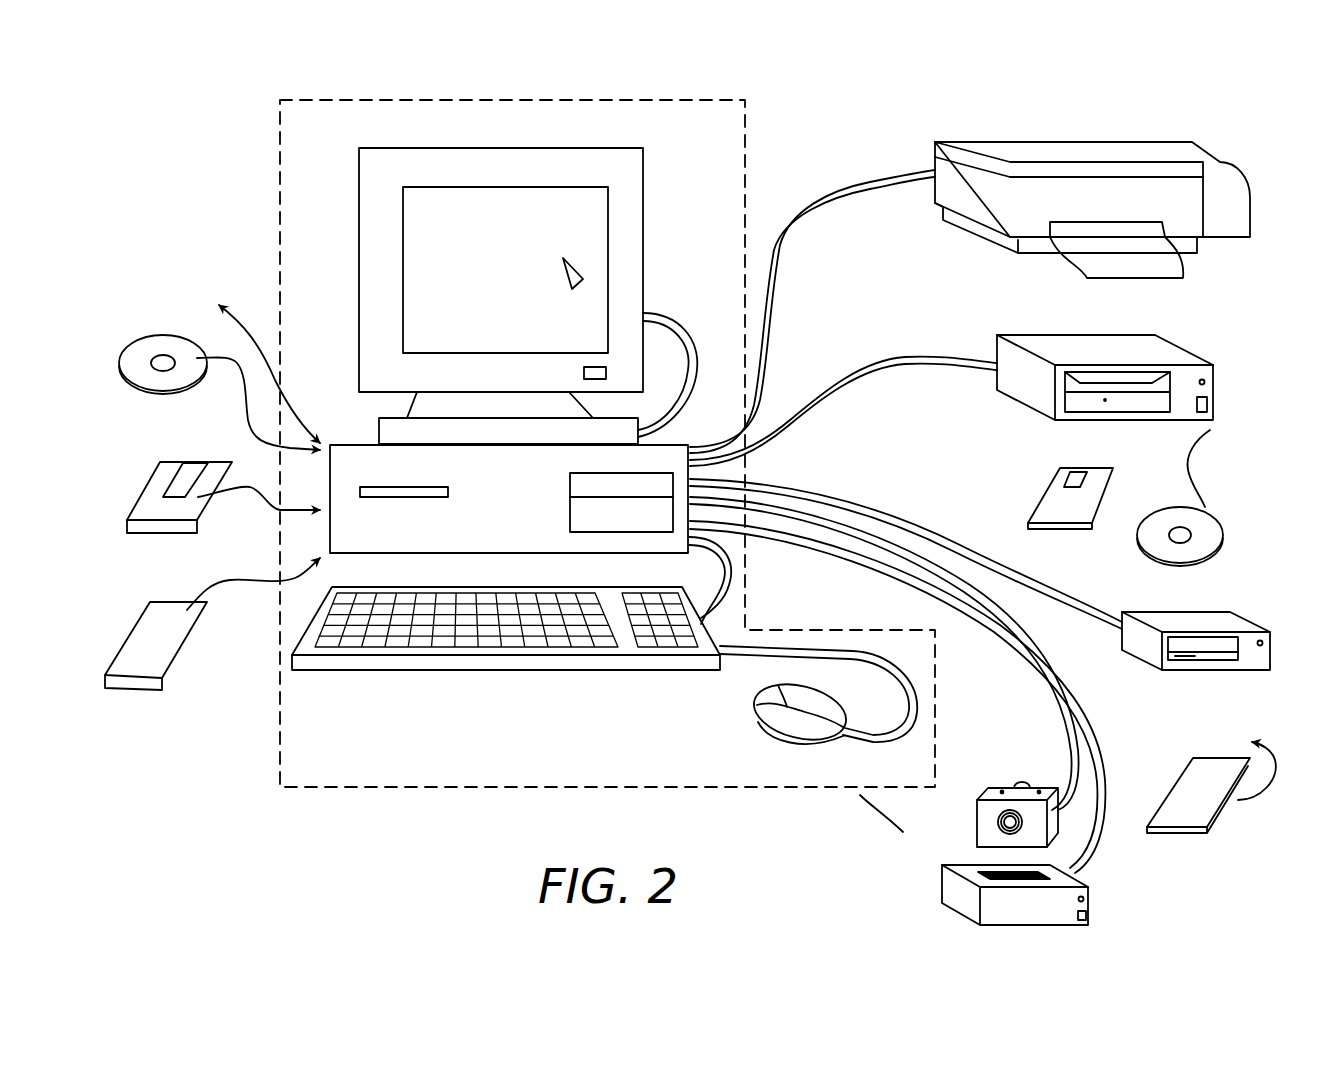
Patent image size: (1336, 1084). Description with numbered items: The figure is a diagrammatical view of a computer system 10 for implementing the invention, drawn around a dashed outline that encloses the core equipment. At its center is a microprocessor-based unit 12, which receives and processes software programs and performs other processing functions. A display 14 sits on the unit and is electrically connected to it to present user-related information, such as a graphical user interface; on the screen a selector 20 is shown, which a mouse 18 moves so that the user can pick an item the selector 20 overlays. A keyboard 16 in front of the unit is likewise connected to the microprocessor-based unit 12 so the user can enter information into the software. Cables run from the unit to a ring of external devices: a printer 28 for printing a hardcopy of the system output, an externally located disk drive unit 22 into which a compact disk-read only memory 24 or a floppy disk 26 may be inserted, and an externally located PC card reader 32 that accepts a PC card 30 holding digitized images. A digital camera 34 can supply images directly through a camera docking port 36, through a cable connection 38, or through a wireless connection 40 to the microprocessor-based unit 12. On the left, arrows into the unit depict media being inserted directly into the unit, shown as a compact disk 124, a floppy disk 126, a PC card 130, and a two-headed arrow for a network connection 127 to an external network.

The computer system 10 is at (774, 129).
The microprocessor-based unit 12 is at (355, 445).
The display 14 is at (470, 148).
The keyboard 16 is at (442, 668).
The mouse 18 is at (762, 717).
The selector 20 is at (583, 268).
The disk drive unit 22 is at (1042, 337).
The compact disk-read only memory (CD-ROM) 24 is at (1224, 537).
The floppy disk 26 is at (1050, 482).
The printer 28 is at (1052, 143).
The personal computer card (PC card) 30 is at (1185, 770).
The PC card reader 32 is at (1212, 670).
The digital camera 34 is at (1022, 780).
The camera docking port 36 is at (958, 905).
The cable connection 38 is at (1033, 665).
The wireless connection 40 is at (977, 813).
The compact disc 124 is at (137, 340).
The floppy disk 126 is at (155, 483).
The network connection 127 is at (243, 366).
The PC card 130 is at (138, 633).